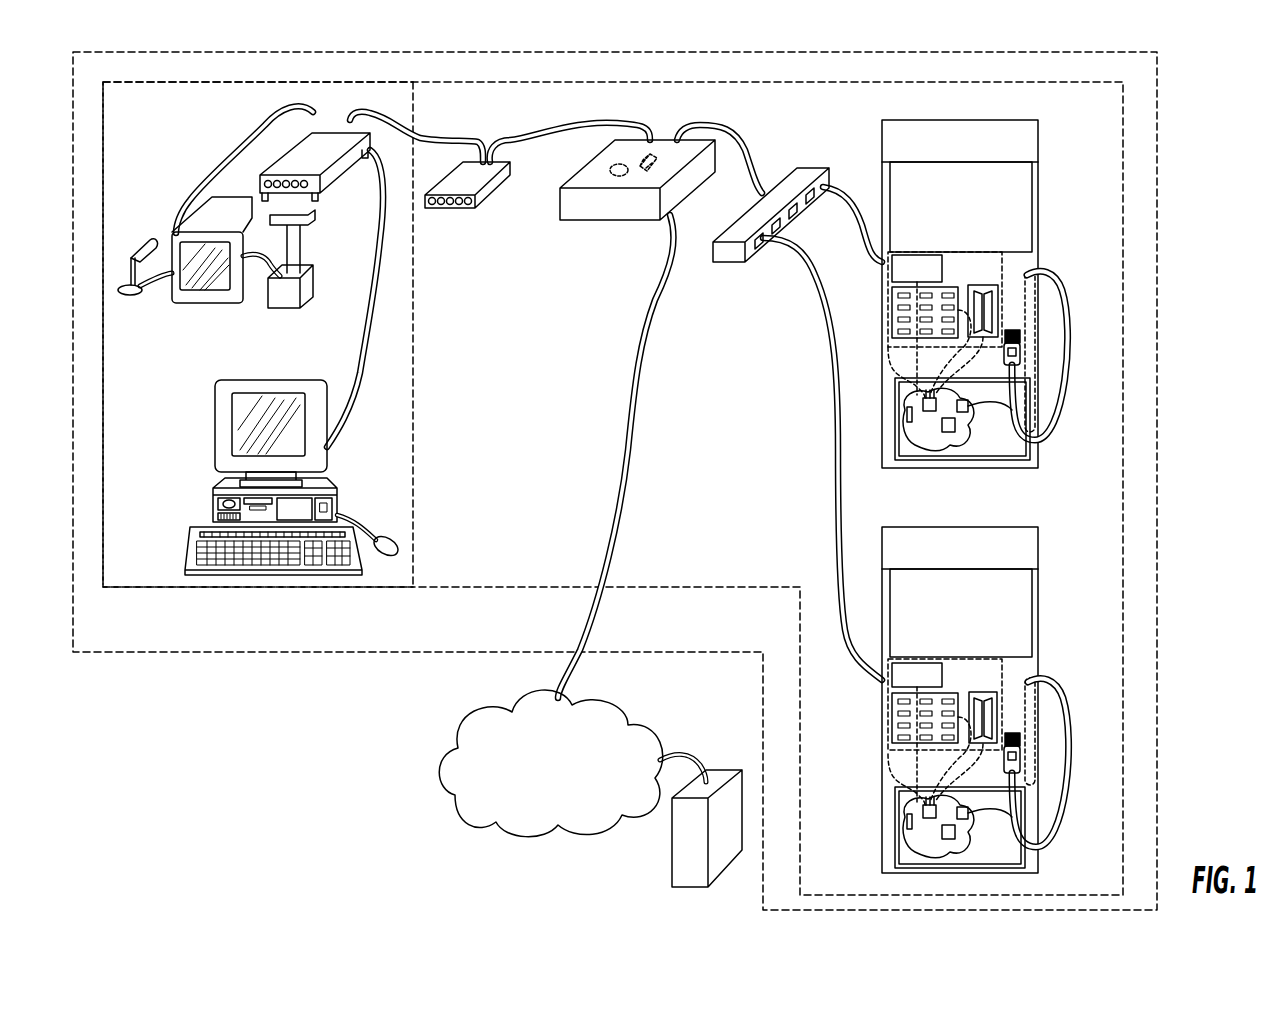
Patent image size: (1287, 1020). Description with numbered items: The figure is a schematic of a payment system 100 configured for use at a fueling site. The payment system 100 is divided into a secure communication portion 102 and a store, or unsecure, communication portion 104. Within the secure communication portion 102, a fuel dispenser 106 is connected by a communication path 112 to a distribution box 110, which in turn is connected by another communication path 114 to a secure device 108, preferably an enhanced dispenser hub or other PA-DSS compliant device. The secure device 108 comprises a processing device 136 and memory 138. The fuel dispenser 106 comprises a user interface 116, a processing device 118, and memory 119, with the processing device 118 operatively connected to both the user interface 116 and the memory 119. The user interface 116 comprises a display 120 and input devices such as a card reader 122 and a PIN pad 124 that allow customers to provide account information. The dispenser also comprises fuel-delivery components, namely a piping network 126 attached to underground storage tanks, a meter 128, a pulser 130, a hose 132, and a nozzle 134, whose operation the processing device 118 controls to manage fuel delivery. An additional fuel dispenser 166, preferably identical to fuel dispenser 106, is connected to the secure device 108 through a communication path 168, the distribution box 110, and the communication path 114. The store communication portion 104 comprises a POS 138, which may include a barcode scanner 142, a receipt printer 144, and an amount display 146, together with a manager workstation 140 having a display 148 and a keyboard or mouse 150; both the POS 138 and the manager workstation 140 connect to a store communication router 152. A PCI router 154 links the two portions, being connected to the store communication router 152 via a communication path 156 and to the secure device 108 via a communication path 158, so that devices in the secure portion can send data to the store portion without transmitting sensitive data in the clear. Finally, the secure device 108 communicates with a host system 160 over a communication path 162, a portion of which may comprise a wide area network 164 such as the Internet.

The payment system 100 is at (528, 624).
The secure communication portion 102 is at (521, 305).
The store communication portion 104 is at (298, 357).
The fuel dispenser 106 is at (1053, 516).
The secure device 108 is at (690, 188).
The distribution box 110 is at (728, 262).
The communication path 112 is at (842, 497).
The communication path 114 is at (748, 168).
The user interface 116 is at (995, 280).
The processing device 118 is at (923, 403).
The memory 119 is at (907, 414).
The display 120 is at (928, 255).
The card reader 122 is at (990, 300).
The PIN pad 124 is at (895, 312).
The piping network 126 is at (935, 450).
The meter 128 is at (953, 428).
The pulser 130 is at (968, 405).
The hose 132 is at (1073, 400).
The nozzle 134 is at (1019, 350).
The processing device 136 is at (618, 177).
The memory 138 is at (200, 303).
The manager workstation 140 is at (330, 493).
The barcode scanner 142 is at (133, 296).
The receipt printer 144 is at (301, 293).
The amount display 146 is at (317, 221).
The display 148 is at (236, 428).
The keyboard or mouse 150 is at (382, 537).
The store communication router 152 is at (326, 150).
The PCI router 154 is at (490, 190).
The communication path 156 is at (447, 138).
The communication path 158 is at (545, 143).
The host system 160 is at (738, 826).
The communication path 162 is at (646, 431).
The wide area network 164 is at (581, 762).
The fuel dispenser 166 is at (1059, 157).
The communication path 168 is at (850, 192).